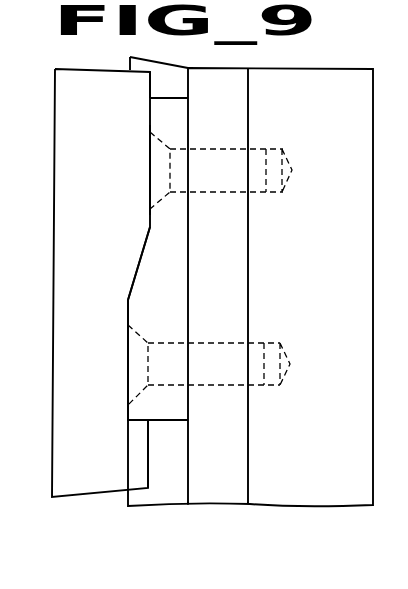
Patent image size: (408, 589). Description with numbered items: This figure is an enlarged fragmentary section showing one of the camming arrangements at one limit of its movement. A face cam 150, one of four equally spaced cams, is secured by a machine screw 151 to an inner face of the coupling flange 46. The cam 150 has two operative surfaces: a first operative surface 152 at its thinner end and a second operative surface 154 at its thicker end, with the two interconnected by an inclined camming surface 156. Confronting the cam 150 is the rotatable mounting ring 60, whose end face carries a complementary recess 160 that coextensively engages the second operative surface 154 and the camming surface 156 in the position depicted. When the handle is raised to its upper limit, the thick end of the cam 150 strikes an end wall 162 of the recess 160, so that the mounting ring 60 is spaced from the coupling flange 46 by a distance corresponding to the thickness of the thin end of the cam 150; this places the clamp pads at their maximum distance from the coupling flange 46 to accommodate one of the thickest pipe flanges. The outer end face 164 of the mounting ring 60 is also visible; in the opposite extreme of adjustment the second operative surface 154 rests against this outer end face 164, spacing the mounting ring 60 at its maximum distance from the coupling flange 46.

The coupling flange 46 is at (304, 453).
The rotatable mounting ring 60 is at (93, 489).
The face cam 150 is at (148, 284).
The machine screw 151 is at (238, 142).
The first operative surface 152 is at (150, 120).
The second operative surface 154 is at (128, 418).
The camming surface 156 is at (141, 252).
The recess 160 is at (132, 323).
The end wall 162 is at (148, 416).
The outer end face 164 is at (149, 172).